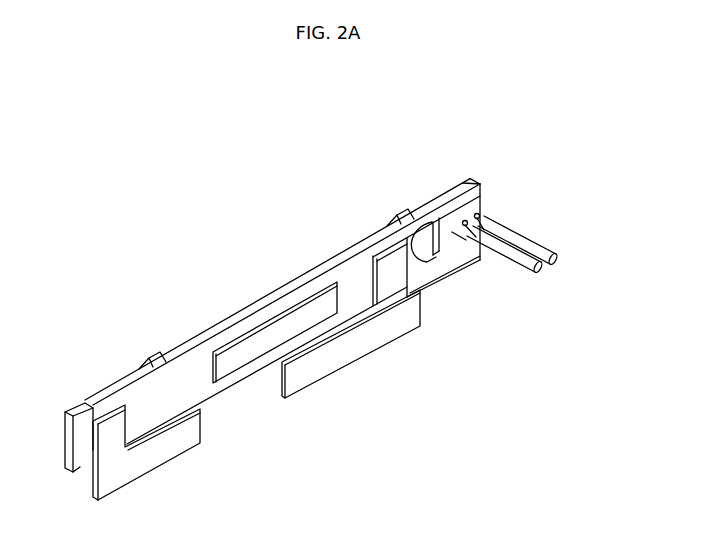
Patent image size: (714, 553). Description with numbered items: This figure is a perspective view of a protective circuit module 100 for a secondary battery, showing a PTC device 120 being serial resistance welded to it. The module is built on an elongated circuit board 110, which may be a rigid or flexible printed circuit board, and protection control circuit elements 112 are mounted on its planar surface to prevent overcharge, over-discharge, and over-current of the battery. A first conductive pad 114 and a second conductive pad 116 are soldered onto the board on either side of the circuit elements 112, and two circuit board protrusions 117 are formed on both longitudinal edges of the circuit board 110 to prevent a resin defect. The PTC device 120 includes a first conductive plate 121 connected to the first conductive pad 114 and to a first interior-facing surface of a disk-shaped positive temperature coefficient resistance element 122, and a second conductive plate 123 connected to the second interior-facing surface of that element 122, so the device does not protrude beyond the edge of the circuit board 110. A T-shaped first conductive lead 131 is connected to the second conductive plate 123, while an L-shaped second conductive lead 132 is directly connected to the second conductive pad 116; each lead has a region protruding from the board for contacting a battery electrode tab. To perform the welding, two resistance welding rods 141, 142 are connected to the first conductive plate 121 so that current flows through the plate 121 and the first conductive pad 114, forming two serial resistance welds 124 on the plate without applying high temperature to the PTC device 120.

The protective circuit module 100 is at (106, 220).
The circuit board 110 is at (263, 300).
The protection control circuit elements 112 is at (235, 368).
The first conductive pad 114 is at (462, 198).
The second conductive pad 116 is at (107, 408).
The circuit board protrusions 117 is at (150, 360).
The PTC device 120 is at (458, 408).
The first conductive plate 121 is at (455, 237).
The positive temperature coefficient resistance element 122 is at (433, 258).
The second conductive plate 123 is at (420, 268).
The serial resistance welds 124 is at (482, 216).
The first conductive lead 131 is at (342, 353).
The second conductive lead 132 is at (148, 464).
The resistance welding rod 141 is at (547, 266).
The resistance welding rod 142 is at (544, 243).